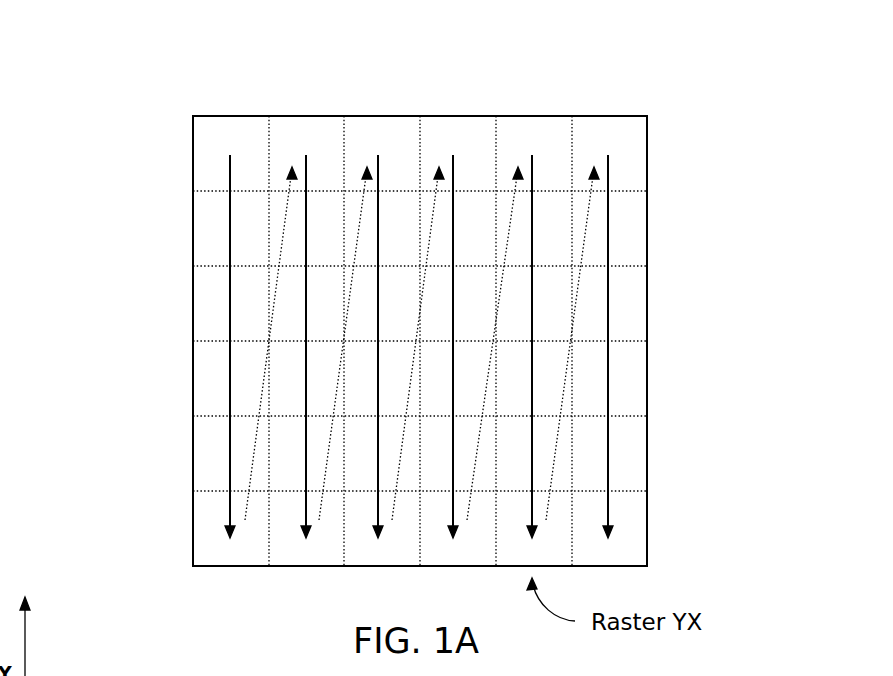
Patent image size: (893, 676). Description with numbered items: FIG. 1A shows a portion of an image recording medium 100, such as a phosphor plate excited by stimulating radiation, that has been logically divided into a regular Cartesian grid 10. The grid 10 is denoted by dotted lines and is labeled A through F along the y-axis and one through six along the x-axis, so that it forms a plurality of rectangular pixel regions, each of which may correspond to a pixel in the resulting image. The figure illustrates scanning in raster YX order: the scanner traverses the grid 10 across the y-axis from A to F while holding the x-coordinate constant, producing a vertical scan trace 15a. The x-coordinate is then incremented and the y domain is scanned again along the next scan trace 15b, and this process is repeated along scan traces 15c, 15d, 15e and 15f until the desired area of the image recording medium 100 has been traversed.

The image recording medium 100 is at (668, 69).
The Cartesian grid 10 is at (628, 190).
The scan trace 15a is at (230, 168).
The scan trace 15b is at (306, 168).
The scan trace 15c is at (378, 168).
The scan trace 15d is at (453, 168).
The scan trace 15e is at (532, 168).
The scan trace 15f is at (608, 168).